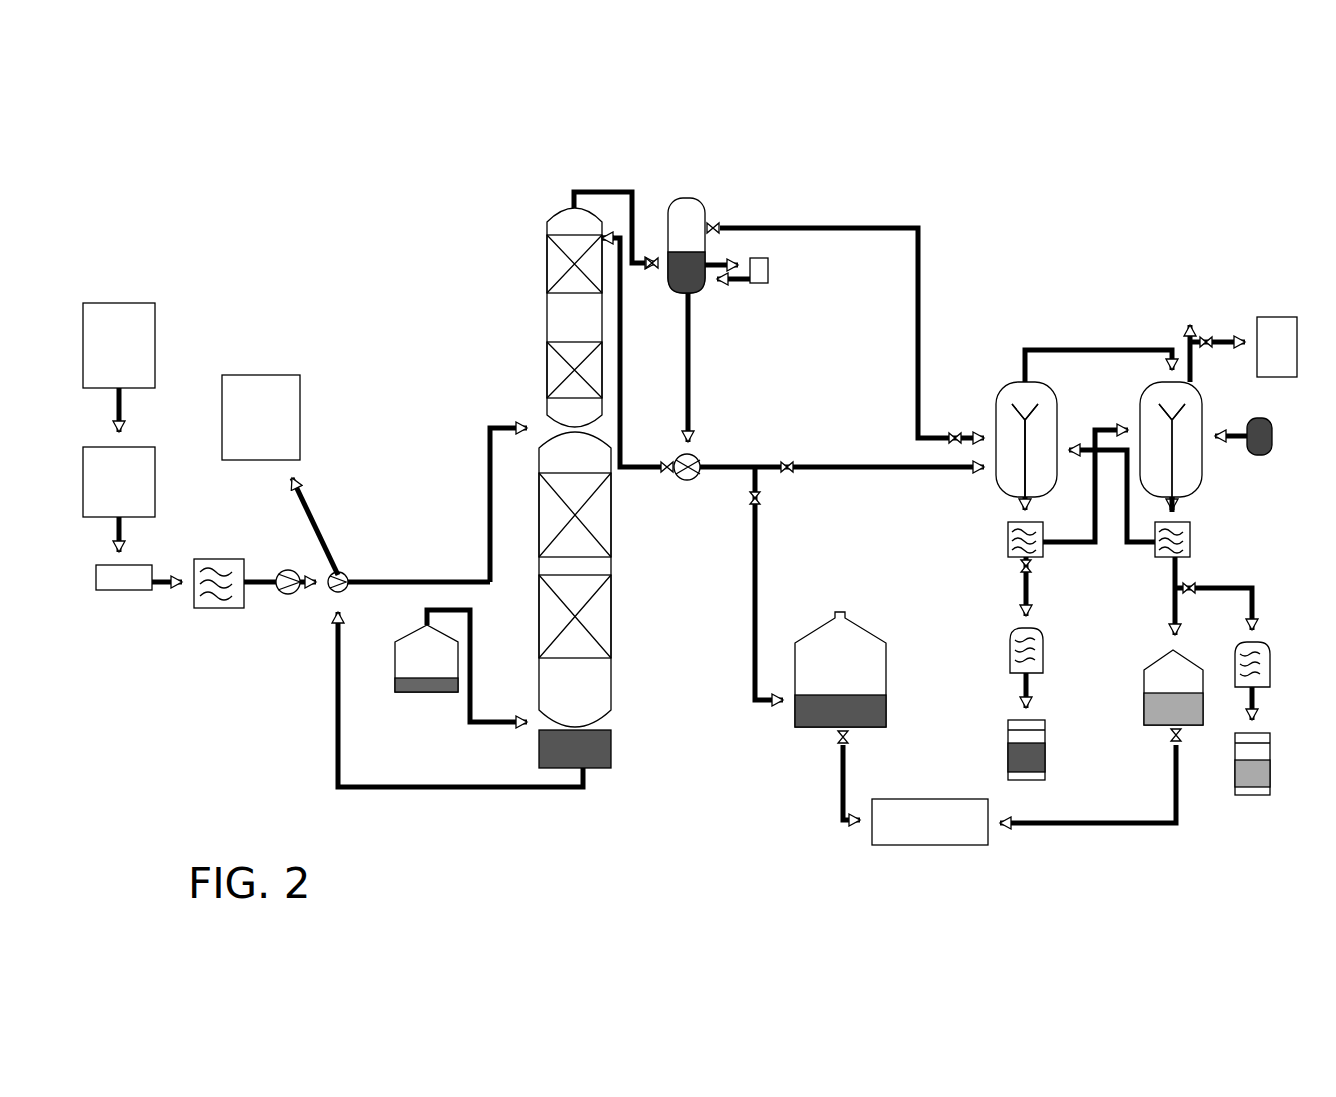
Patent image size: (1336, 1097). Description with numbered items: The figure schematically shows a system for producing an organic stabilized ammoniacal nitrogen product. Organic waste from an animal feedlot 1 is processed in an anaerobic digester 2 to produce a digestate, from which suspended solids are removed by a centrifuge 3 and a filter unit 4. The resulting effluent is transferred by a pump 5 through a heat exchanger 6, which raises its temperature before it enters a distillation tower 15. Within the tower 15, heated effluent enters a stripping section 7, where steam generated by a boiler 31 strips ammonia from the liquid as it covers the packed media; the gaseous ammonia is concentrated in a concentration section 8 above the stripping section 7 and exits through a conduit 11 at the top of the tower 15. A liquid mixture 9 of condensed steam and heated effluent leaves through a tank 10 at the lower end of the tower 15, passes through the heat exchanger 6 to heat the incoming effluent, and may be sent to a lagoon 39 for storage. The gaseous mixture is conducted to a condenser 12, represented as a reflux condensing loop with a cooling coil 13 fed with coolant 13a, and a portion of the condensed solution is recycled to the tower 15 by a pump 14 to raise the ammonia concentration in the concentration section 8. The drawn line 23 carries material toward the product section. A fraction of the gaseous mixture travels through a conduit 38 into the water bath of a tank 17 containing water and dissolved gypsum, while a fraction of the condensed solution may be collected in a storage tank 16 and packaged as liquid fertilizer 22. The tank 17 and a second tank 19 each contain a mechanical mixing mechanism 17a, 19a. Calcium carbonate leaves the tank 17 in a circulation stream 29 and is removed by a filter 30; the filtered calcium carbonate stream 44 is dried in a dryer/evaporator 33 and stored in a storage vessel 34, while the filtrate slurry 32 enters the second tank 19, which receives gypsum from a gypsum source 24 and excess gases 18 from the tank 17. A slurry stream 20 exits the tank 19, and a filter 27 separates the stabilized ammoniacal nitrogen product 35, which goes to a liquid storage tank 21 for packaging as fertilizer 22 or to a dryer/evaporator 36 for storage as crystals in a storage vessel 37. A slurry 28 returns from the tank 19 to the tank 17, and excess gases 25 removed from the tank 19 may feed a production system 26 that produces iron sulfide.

The animal feedlot 1 is at (110, 360).
The anaerobic digester 2 is at (110, 500).
The centrifuge 3 is at (130, 591).
The filter unit 4 is at (226, 559).
The pump 5 is at (285, 596).
The heat exchanger 6 is at (345, 572).
The stripping section 7 is at (562, 693).
The concentration section 8 is at (565, 333).
The liquid mixture 9 is at (447, 789).
The tank 10 is at (612, 760).
The conduit 11 is at (604, 190).
The condenser 12 is at (687, 198).
The cooling coil 13 is at (700, 290).
The coolant 13a is at (772, 277).
The pump 14 is at (682, 479).
The distillation tower 15 is at (515, 259).
The storage tank 16 is at (828, 689).
The tank 17 is at (1010, 386).
The mechanical mixing mechanism 17a is at (1020, 442).
The excess gases 18 is at (1050, 350).
The second tank 19 is at (1142, 395).
The mechanical mixing mechanism 19a is at (1175, 442).
The slurry stream 20 is at (1180, 505).
The liquid storage tank 21 is at (1161, 694).
The liquid fertilizer 22 is at (915, 837).
The feed line 23 is at (722, 465).
The gypsum source 24 is at (1273, 440).
The excess gases 25 is at (1190, 322).
The production system 26 is at (1288, 358).
The filter 27 is at (1192, 545).
The slurry 28 is at (1140, 546).
The circulation stream 29 is at (1040, 490).
The filter 30 is at (1006, 548).
The boiler 31 is at (432, 692).
The filtrate slurry 32 is at (1078, 546).
The dryer/evaporator 33 is at (1010, 662).
The storage vessel 34 is at (1008, 756).
The stabilized ammoniacal nitrogen product 35 is at (1175, 598).
The dryer/evaporator 36 is at (1270, 673).
The storage vessel 37 is at (1270, 776).
The conduit 38 is at (808, 228).
The lagoon 39 is at (249, 433).
The filtered calcium carbonate stream 44 is at (1018, 599).